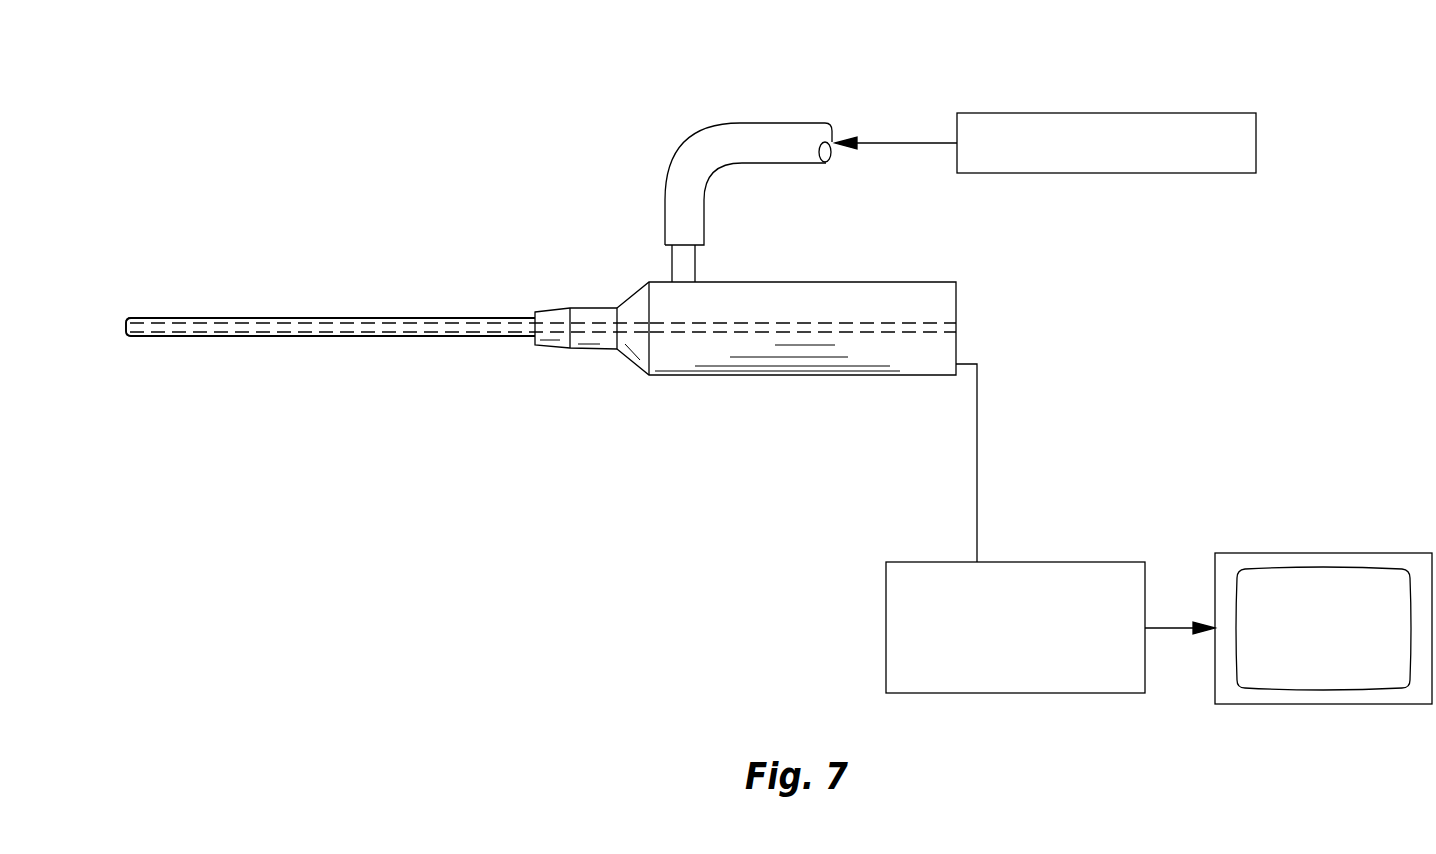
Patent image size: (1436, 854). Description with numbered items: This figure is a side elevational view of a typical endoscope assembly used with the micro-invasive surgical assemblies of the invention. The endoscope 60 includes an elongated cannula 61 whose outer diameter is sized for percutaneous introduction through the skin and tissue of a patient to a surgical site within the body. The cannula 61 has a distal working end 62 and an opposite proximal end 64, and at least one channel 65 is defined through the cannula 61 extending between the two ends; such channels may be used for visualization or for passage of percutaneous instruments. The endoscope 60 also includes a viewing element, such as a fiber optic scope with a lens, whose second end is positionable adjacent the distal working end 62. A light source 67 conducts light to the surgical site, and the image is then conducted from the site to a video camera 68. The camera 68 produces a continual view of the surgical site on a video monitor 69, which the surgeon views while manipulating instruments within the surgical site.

The endoscope 60 is at (648, 376).
The elongated cannula 61 is at (288, 318).
The distal working end 62 is at (128, 338).
The proximal end 64 is at (533, 341).
The channel 65 is at (382, 336).
The light source 67 is at (1053, 113).
The video camera 68 is at (1027, 693).
The video monitor 69 is at (1328, 704).